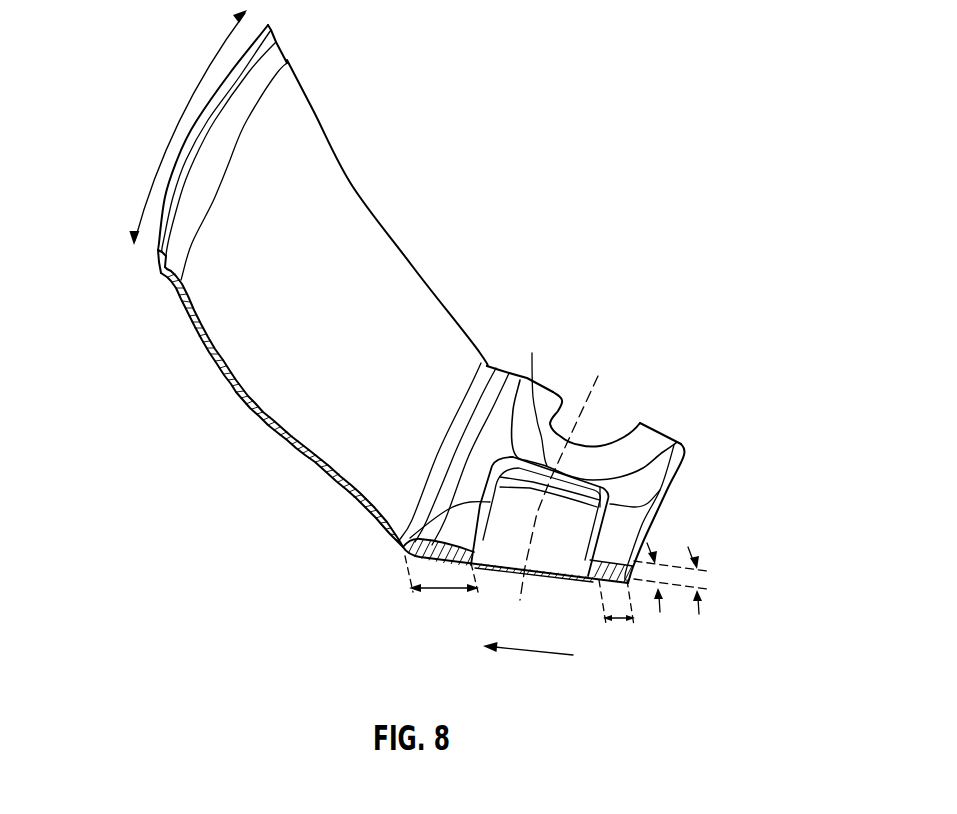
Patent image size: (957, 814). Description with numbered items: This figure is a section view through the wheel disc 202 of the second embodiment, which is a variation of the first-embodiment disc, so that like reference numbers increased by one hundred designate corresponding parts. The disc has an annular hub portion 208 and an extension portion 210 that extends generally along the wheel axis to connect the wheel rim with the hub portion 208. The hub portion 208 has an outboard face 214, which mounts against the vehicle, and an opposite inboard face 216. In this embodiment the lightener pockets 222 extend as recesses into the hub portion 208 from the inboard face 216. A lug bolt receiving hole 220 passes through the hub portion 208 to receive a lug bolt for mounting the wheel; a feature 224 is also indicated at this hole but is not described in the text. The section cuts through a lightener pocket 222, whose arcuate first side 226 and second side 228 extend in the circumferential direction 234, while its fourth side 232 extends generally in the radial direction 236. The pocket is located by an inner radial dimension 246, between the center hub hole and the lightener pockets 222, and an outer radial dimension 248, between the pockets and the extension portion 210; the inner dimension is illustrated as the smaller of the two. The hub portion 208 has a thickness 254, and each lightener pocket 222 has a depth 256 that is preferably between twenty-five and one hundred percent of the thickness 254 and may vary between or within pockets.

The wheel disc 202 is at (121, 42).
The extension portion 210 is at (341, 200).
The circumferential direction 234 is at (166, 148).
The hub portion 208 is at (678, 457).
The inboard face 216 is at (657, 467).
The lug bolt receiving hole 220 is at (615, 424).
The fourth side 232 is at (531, 393).
The notch axis 224 is at (595, 389).
The first side 226 is at (610, 504).
The lightener pockets 222 is at (570, 557).
The second side 228 is at (406, 549).
The outboard face 214 is at (507, 573).
The outer radial dimension 248 is at (447, 588).
The inner radial dimension 246 is at (623, 621).
The depth 256 is at (693, 553).
The thickness 254 is at (660, 607).
The radial direction 236 is at (535, 653).